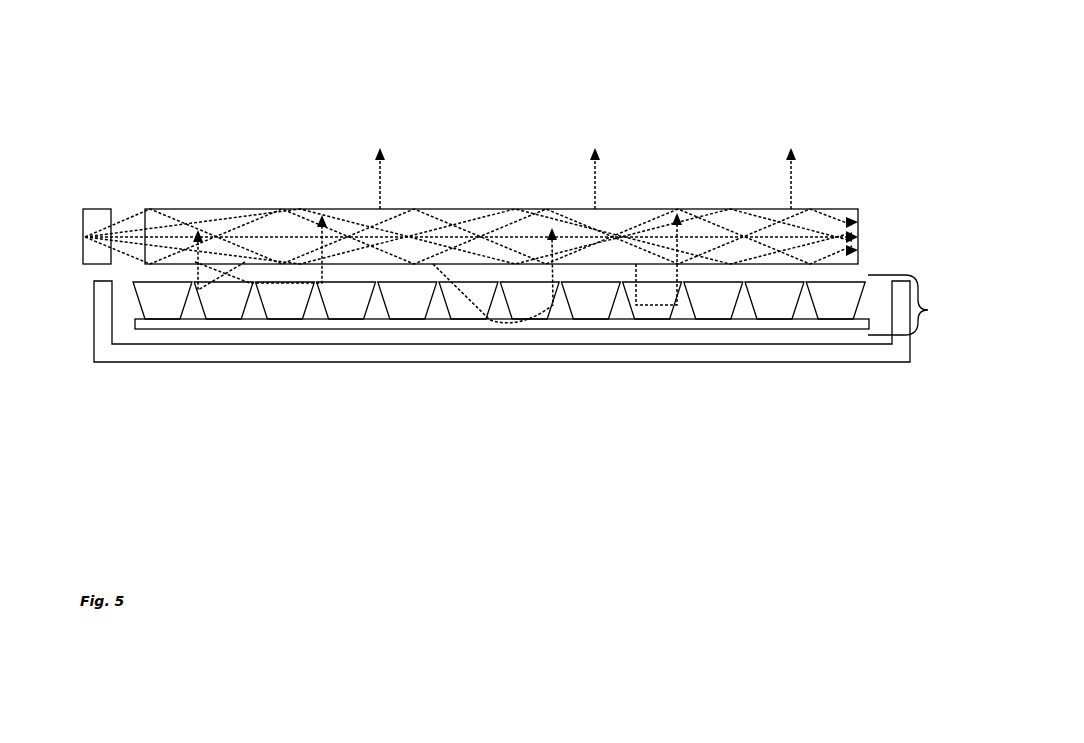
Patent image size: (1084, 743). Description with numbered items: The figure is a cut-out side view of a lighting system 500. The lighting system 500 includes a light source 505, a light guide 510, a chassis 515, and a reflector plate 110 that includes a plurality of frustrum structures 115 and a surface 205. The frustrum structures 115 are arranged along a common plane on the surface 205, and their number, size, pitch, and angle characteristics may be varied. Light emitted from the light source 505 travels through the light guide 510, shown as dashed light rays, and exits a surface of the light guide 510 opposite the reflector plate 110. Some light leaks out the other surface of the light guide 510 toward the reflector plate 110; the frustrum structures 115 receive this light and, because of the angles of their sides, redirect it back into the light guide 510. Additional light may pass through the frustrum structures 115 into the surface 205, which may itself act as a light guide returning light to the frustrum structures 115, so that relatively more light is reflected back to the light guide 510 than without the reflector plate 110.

The lighting system 500 is at (140, 78).
The light source 505 is at (102, 227).
The light guide 510 is at (282, 217).
The chassis 515 is at (125, 353).
The surface 205 is at (280, 323).
The frustrum structures 115 is at (408, 315).
The reflector plate 110 is at (915, 305).